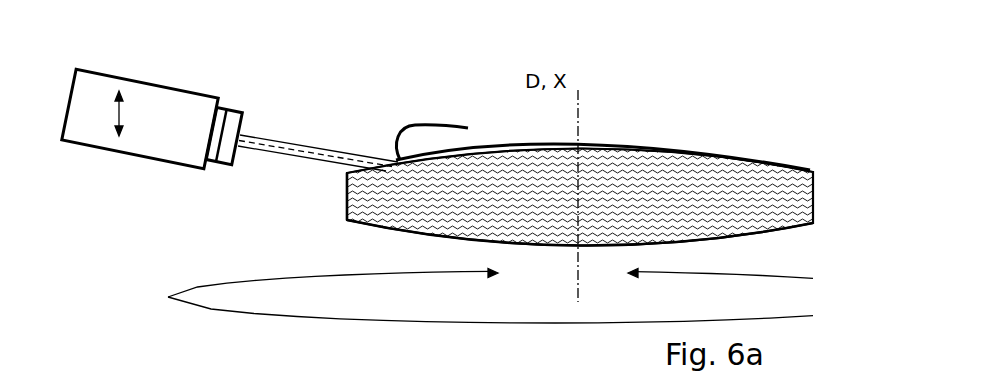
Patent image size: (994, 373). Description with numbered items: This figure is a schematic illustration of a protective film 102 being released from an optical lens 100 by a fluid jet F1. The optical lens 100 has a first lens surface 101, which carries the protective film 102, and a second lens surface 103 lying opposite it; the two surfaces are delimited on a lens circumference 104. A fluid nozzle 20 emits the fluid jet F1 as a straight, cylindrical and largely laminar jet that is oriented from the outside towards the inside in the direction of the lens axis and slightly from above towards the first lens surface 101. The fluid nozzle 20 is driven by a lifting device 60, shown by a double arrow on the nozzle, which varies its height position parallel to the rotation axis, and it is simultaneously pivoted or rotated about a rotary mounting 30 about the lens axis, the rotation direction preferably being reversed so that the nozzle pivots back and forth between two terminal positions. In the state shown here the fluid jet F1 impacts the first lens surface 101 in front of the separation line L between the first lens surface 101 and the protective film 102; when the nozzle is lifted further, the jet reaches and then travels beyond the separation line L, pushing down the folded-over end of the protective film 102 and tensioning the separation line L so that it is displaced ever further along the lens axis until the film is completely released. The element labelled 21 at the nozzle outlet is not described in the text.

The fluid nozzle 20 is at (150, 100).
The laser optics / output lens 21 is at (235, 130).
The lifting device 60 is at (113, 128).
The fluid jet F1 is at (290, 148).
The separation line L is at (400, 157).
The optical lens 100 is at (612, 167).
The first lens surface 101 is at (660, 150).
The protective film 102 is at (698, 148).
The second lens surface 103 is at (360, 225).
The lens circumference 104 is at (347, 202).
The rotary mounting 30 is at (490, 296).